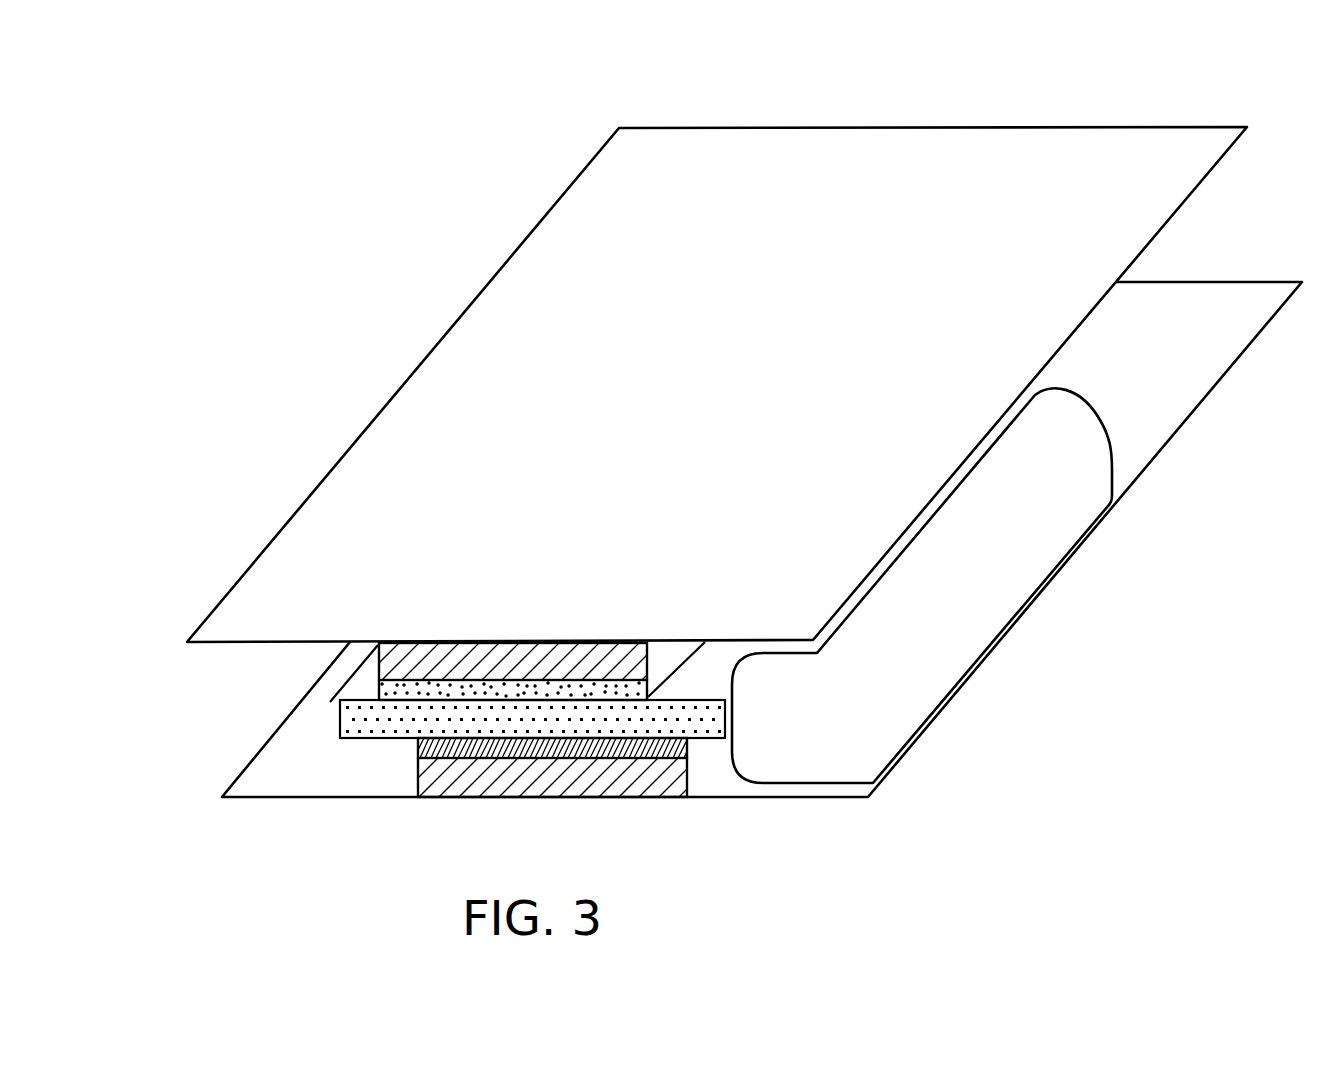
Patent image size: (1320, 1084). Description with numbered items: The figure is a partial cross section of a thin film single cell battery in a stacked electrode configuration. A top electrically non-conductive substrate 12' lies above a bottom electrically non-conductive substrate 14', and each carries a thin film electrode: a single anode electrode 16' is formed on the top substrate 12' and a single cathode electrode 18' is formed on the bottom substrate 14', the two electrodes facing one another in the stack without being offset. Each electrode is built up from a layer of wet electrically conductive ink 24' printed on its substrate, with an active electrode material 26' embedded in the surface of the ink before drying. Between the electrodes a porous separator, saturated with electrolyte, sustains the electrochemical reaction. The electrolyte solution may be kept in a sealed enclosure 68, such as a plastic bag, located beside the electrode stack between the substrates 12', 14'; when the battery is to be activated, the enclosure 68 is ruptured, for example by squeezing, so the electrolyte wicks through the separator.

The top electrically non-conductive substrate 12' is at (708, 384).
The bottom electrically non-conductive substrate 14' is at (735, 591).
The anode electrode 16' is at (527, 625).
The cathode electrode 18' is at (552, 806).
The electrically conductive ink 24' is at (520, 724).
The active electrode material 26' is at (513, 770).
The enclosure 68 is at (923, 738).